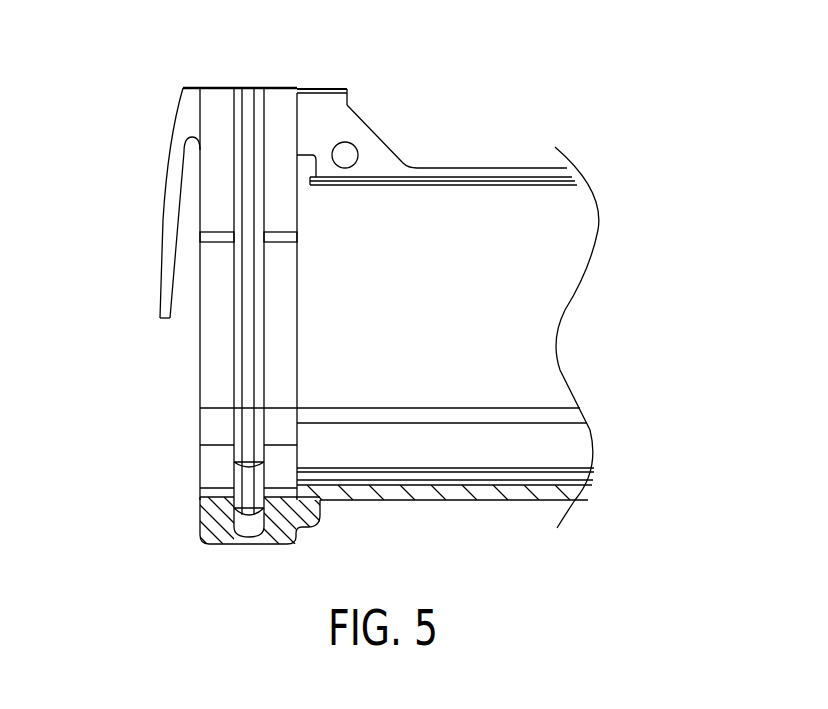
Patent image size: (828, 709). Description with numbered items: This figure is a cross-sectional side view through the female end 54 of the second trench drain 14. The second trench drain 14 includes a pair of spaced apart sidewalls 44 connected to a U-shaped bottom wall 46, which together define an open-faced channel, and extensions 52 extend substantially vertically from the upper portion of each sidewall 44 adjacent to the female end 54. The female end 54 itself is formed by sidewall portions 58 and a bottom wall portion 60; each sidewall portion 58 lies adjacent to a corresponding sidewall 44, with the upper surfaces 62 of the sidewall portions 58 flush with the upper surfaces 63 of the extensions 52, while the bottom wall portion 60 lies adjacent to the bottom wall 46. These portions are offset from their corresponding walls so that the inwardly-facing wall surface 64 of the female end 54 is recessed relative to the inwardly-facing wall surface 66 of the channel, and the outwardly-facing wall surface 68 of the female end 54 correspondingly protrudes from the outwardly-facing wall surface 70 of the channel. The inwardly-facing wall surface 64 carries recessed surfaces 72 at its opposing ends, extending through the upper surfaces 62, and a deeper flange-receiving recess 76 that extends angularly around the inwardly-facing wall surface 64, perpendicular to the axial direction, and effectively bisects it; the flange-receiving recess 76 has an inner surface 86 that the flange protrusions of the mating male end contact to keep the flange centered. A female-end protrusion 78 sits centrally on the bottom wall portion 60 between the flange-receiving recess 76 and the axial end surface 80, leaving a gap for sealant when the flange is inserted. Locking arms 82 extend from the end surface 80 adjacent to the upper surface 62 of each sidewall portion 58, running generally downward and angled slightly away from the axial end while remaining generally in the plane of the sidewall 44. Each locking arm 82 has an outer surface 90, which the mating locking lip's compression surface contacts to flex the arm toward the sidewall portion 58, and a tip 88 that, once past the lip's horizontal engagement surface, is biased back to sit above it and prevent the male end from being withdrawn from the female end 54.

The second trench drain 14 is at (625, 155).
The sidewalls 44 is at (518, 322).
The U-shaped bottom wall 46 is at (537, 475).
The extensions 52 is at (352, 110).
The female end 54 is at (257, 68).
The sidewall portions 58 is at (198, 366).
The bottom wall portion 60 is at (195, 535).
The upper surfaces 62 is at (217, 87).
The upper surfaces 63 is at (325, 88).
The inwardly-facing wall surface 64 is at (283, 462).
The inwardly-facing wall surface 66 is at (410, 490).
The outwardly-facing wall surface 68 is at (270, 547).
The outwardly-facing wall surface 70 is at (447, 502).
The recessed surfaces 72 is at (282, 150).
The flange-receiving recess 76 is at (248, 367).
The female-end protrusion 78 is at (218, 500).
The axial end surface 80 is at (200, 338).
The locking arms 82 is at (158, 254).
The inner surface 86 is at (243, 508).
The tip 88 is at (160, 318).
The outer surface 90 is at (165, 190).